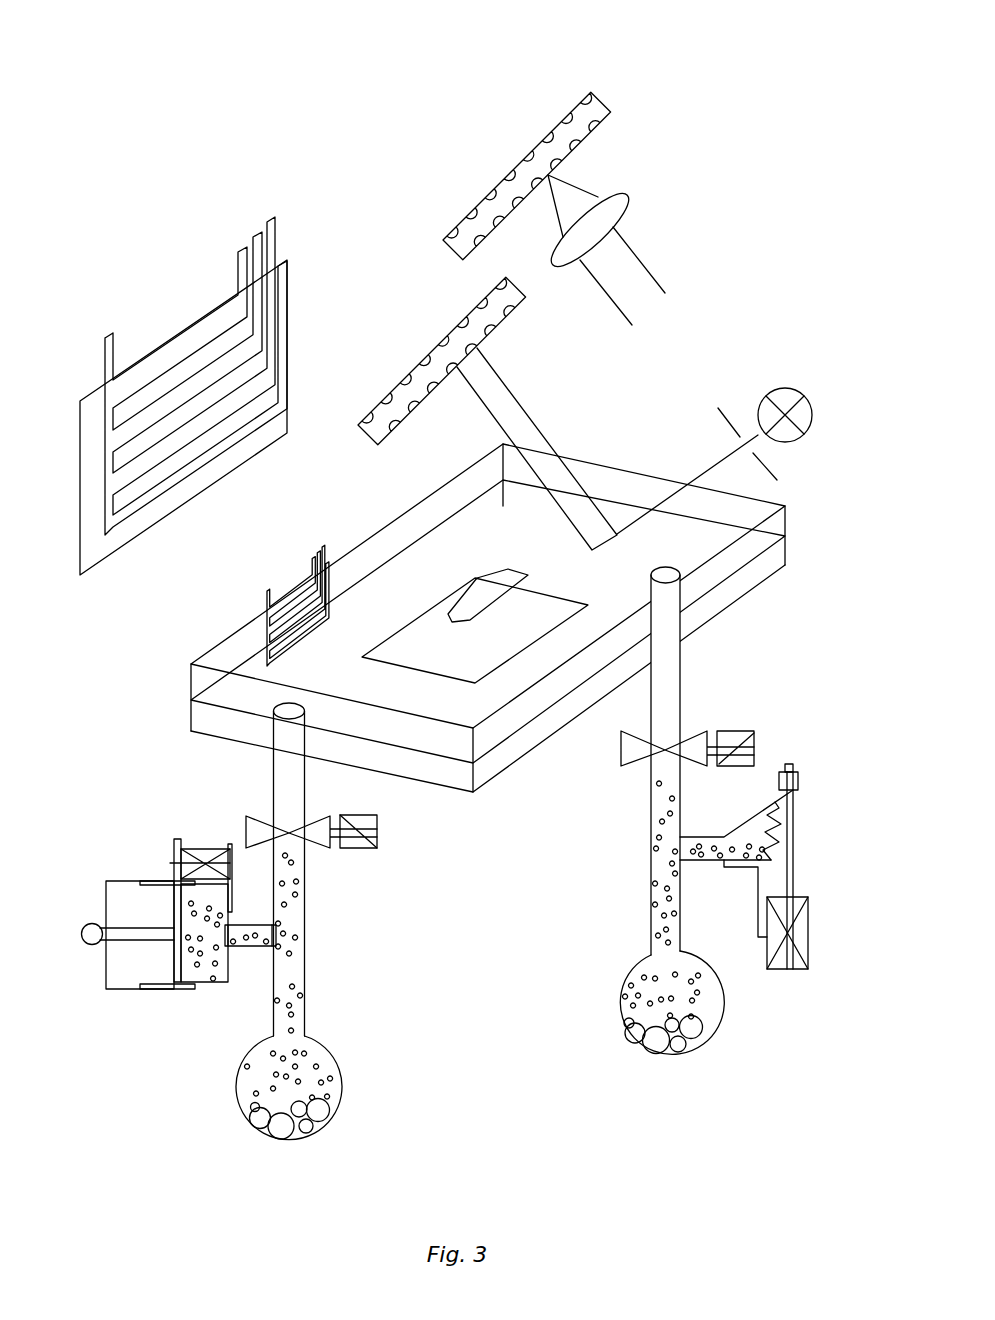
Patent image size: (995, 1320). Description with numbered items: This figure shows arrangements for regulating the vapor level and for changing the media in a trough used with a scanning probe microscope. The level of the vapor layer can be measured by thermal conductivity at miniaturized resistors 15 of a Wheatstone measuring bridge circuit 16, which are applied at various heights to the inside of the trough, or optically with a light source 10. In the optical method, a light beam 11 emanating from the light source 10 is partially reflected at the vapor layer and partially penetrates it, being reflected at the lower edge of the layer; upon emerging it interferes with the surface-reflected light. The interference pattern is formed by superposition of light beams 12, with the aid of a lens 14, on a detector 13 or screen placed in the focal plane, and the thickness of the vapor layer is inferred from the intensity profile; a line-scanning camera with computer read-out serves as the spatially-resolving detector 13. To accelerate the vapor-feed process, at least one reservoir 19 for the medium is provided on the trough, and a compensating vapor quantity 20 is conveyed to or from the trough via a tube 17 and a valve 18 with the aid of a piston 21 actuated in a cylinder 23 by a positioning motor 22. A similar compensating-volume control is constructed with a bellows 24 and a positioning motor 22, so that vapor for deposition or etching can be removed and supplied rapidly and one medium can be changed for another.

The light source 10 is at (787, 388).
The light beam 11 is at (710, 466).
The light beams 12 is at (482, 390).
The detector 13 is at (405, 378).
The lens 14 is at (625, 197).
The miniaturized resistors 15 is at (185, 421).
The Wheatstone measuring bridge circuit 16 is at (107, 335).
The tube 17 is at (656, 690).
The valve 18 is at (621, 750).
The reservoir 19 is at (306, 1089).
The compensating vapor quantity 20 is at (207, 951).
The piston 21 is at (174, 951).
The positioning motor 22 is at (199, 849).
The cylinder 23 is at (118, 881).
The bellows 24 is at (750, 828).